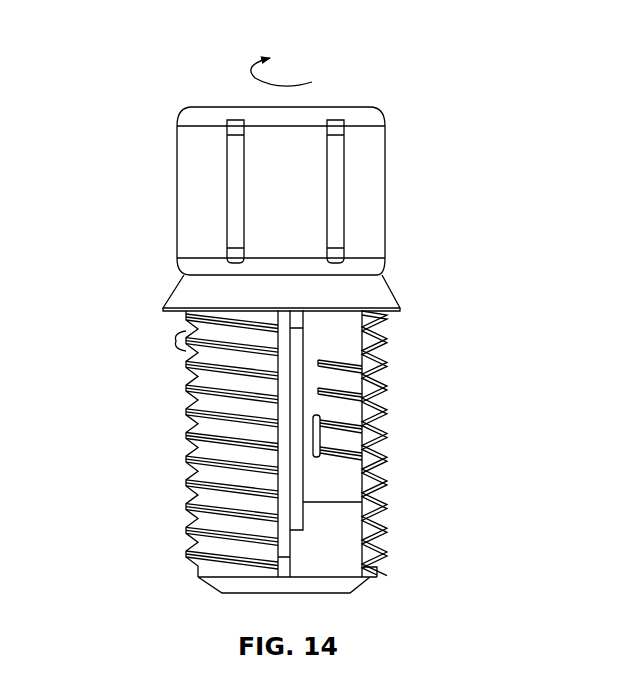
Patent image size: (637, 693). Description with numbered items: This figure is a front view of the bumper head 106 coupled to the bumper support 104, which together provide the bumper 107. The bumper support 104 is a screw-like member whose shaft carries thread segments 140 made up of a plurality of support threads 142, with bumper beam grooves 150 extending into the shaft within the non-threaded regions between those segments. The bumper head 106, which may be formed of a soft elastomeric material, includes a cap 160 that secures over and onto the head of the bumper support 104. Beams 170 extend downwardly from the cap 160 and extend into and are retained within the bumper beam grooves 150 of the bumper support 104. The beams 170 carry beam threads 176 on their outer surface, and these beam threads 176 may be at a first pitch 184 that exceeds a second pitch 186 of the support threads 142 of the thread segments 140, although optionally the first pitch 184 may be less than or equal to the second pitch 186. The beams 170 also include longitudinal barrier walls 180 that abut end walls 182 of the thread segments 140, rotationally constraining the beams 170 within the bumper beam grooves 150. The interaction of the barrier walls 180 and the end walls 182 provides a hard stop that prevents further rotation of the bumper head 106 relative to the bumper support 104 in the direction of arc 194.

The bumper 107 is at (168, 110).
The cap 160 is at (385, 108).
The bumper head 106 is at (394, 156).
The arc 194 is at (288, 80).
The support threads 142 is at (198, 332).
The second pitch 186 is at (176, 338).
The thread segments 140 is at (188, 385).
The bumper support 104 is at (181, 454).
The end walls 182 is at (282, 520).
The longitudinal barrier walls 180 is at (298, 345).
The bumper beam grooves 150 is at (317, 513).
The beams 170 is at (383, 358).
The beam threads 176 is at (348, 398).
The first pitch 184 is at (312, 437).